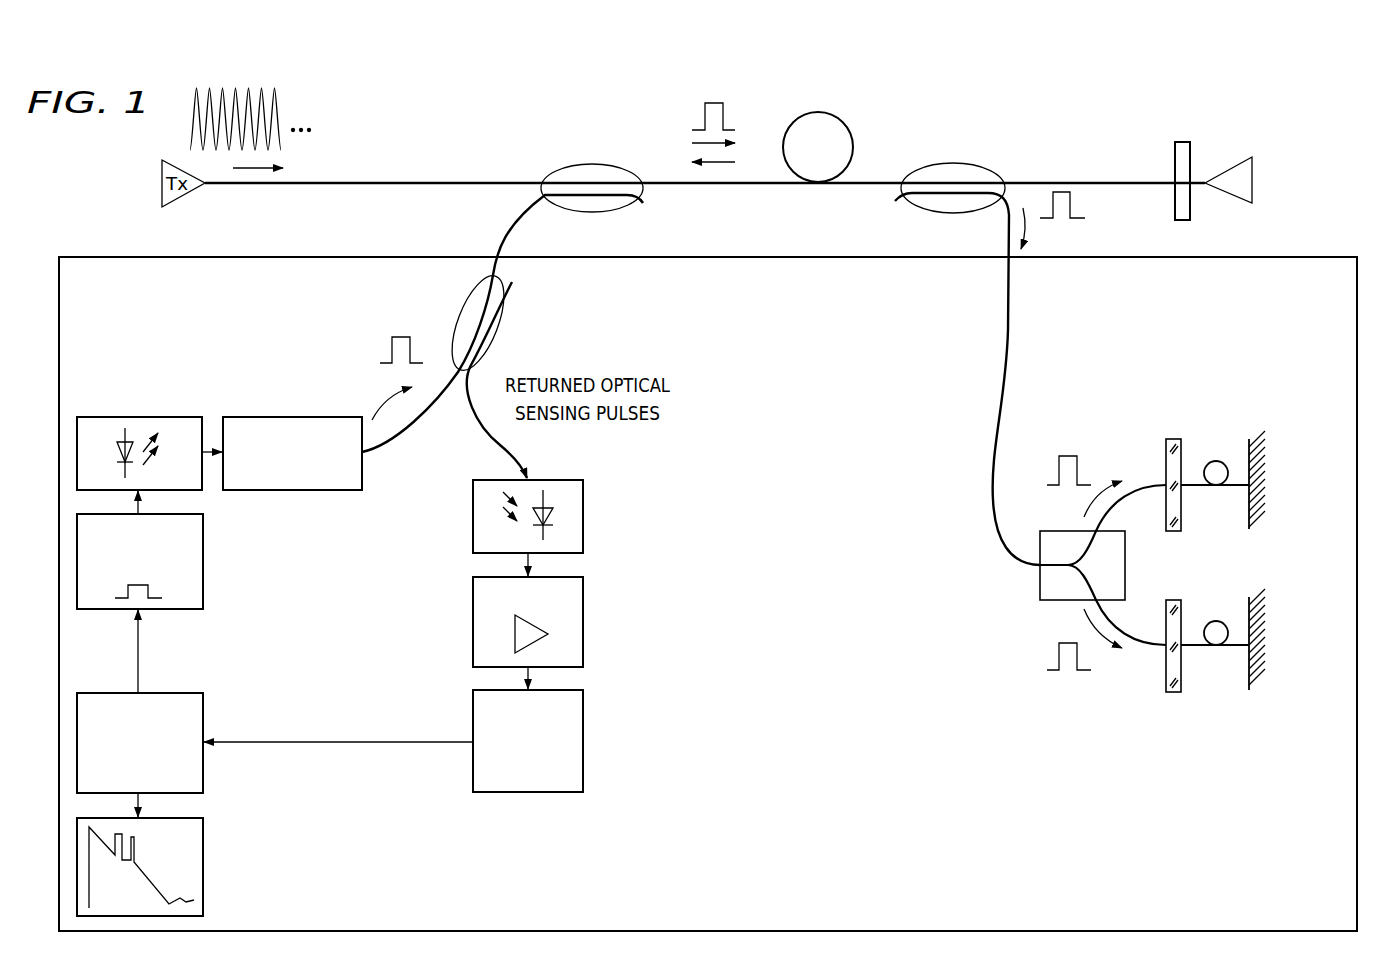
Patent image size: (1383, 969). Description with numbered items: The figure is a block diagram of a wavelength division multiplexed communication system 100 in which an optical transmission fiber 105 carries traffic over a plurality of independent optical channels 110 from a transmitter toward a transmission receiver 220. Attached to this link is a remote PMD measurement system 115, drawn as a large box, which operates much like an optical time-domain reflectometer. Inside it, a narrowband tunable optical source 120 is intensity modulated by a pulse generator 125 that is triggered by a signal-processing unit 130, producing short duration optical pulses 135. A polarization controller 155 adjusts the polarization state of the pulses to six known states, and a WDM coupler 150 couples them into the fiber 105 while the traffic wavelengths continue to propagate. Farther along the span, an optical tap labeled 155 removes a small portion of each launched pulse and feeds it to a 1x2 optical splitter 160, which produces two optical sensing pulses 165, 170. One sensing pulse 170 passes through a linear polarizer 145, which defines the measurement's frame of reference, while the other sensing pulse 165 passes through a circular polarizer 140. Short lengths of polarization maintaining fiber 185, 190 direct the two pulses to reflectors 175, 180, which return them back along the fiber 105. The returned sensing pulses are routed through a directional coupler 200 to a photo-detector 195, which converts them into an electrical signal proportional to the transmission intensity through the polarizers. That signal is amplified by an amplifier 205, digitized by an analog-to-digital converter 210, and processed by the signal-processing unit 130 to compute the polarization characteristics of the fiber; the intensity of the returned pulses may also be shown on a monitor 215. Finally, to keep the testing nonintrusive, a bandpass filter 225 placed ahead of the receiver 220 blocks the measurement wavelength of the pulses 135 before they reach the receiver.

The wavelength division multiplexed communication system 100 is at (836, 89).
The optical transmission fiber 105 is at (841, 120).
The optical channels 110 is at (444, 105).
The remote PMD measurement system 115 is at (95, 257).
The narrowband tunable optical source 120 is at (138, 417).
The pulse generator 125 is at (203, 563).
The signal-processing unit 130 is at (203, 700).
The optical pulses 135 is at (727, 114).
The circular polarizer 140 is at (1173, 531).
The linear polarizer 145 is at (1173, 692).
The WDM coupler 150 is at (553, 175).
The polarization controller 155 is at (998, 172).
The 1x2 optical splitter 160 is at (1040, 592).
The optical sensing pulse 165 is at (1070, 455).
The optical sensing pulse 170 is at (1052, 672).
The reflector 175 is at (1255, 530).
The reflector 180 is at (1262, 648).
The polarization maintaining fiber 185 is at (1222, 461).
The polarization maintaining fiber 190 is at (1216, 621).
The photo-detector 195 is at (473, 514).
The directional coupler 200 is at (503, 320).
The amplifier 205 is at (473, 619).
The analog-to-digital converter 210 is at (583, 742).
The monitor 215 is at (203, 822).
The transmission receiver 220 is at (1240, 163).
The bandpass filter 225 is at (1183, 142).